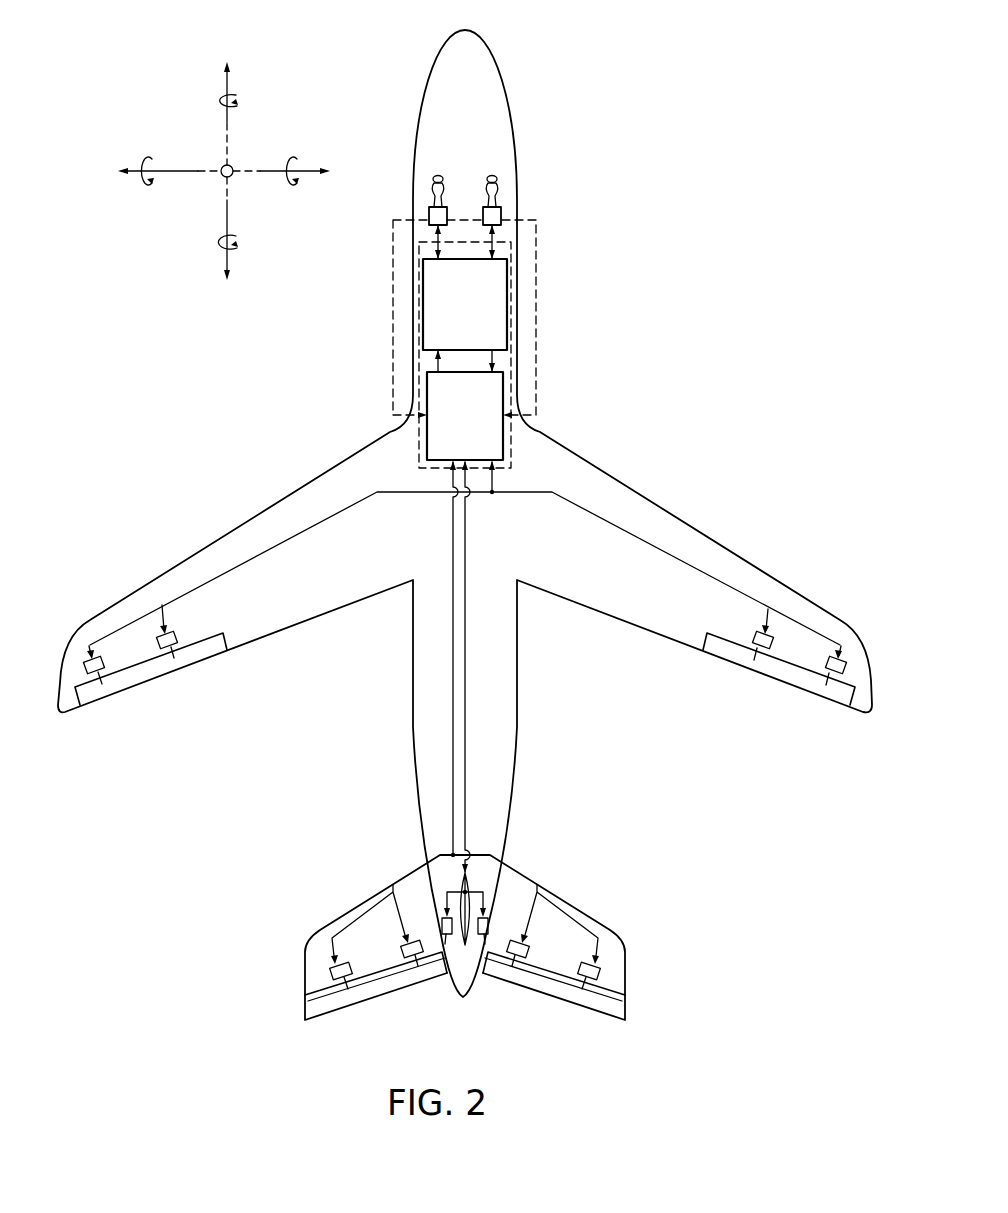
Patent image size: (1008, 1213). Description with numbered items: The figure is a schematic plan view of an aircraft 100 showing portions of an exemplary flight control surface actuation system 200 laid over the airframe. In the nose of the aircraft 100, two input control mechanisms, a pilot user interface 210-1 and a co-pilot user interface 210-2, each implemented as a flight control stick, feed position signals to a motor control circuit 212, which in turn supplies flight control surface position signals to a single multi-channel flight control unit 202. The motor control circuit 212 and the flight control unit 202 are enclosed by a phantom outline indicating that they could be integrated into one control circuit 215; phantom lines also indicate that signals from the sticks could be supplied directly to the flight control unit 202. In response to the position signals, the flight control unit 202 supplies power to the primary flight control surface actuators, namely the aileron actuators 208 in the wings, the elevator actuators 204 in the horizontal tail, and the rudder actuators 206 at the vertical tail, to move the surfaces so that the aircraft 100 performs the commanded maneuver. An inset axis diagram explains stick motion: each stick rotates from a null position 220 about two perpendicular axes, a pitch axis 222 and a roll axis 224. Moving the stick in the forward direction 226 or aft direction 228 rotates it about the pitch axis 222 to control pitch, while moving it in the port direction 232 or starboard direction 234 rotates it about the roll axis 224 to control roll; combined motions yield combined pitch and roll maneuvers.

The aircraft 100 is at (491, 54).
The flight control surface actuation system 200 is at (464, 176).
The flight control unit 202 is at (500, 448).
The elevator actuators 204 is at (332, 972).
The rudder actuators 206 is at (447, 948).
The aileron actuators 208 is at (176, 637).
The pilot user interface 210-1 is at (430, 212).
The co-pilot user interface 210-2 is at (497, 211).
The motor control circuit 212 is at (495, 285).
The control circuit 215 is at (536, 246).
The null position 220 is at (222, 178).
The pitch axis 222 is at (173, 171).
The roll axis 224 is at (228, 128).
The forward direction 226 is at (147, 185).
The aft direction 228 is at (293, 185).
The port direction 232 is at (215, 242).
The starboard direction 234 is at (240, 101).